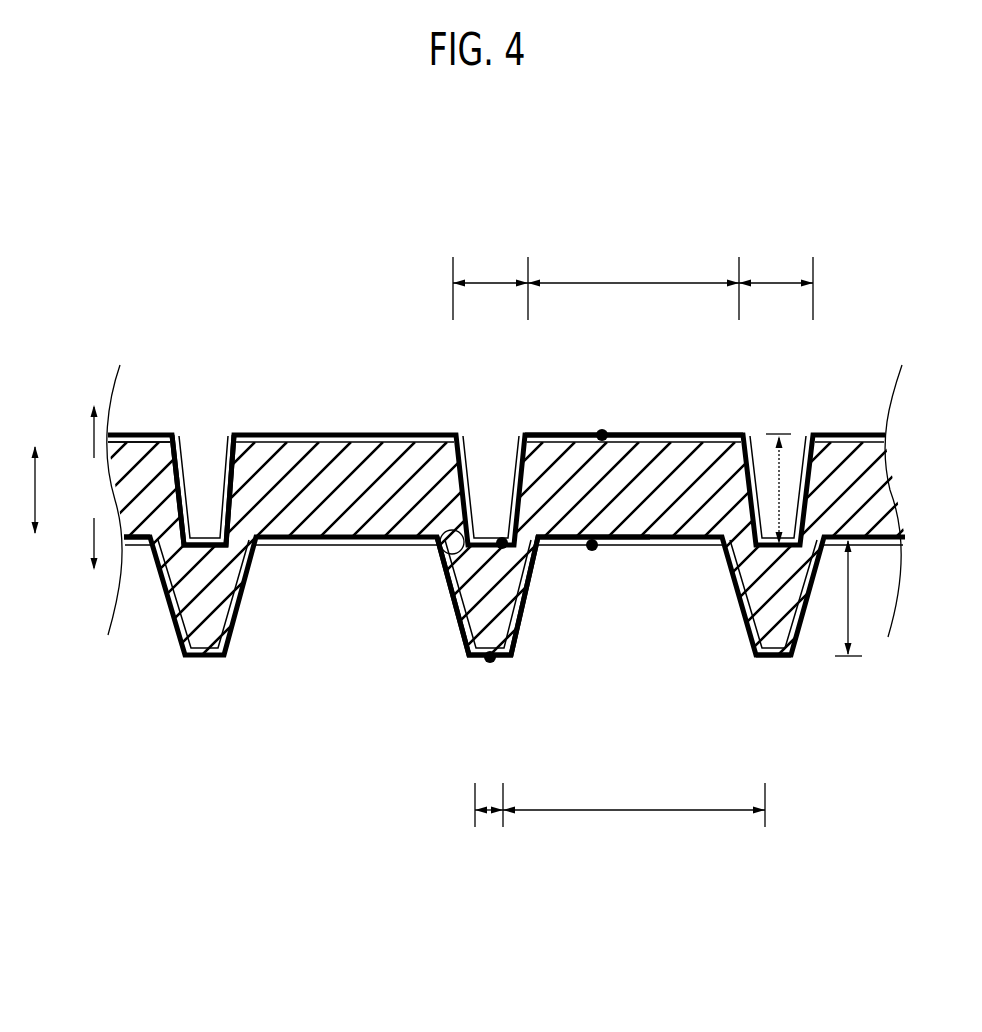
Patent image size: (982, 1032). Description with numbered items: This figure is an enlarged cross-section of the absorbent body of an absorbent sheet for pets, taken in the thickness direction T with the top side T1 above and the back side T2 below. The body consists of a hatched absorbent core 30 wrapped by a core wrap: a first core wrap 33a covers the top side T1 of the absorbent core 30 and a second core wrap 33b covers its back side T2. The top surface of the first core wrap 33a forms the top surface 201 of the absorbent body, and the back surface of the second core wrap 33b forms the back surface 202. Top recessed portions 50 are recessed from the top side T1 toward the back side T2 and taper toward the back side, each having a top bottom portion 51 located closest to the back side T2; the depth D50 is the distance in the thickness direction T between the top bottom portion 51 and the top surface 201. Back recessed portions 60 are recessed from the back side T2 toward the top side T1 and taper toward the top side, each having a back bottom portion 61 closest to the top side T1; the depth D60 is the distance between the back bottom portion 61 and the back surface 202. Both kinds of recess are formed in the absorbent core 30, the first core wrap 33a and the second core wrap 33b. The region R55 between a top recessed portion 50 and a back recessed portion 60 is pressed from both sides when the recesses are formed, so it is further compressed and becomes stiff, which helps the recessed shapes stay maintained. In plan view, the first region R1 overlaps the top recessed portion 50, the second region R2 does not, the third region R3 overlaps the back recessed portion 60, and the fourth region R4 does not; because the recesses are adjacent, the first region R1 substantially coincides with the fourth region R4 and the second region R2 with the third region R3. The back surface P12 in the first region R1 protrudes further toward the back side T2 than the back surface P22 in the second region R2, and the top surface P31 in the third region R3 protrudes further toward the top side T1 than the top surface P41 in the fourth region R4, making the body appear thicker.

The absorbent core 30 is at (327, 510).
The first core wrap 33a is at (138, 442).
The second core wrap 33b is at (140, 543).
The top recessed portion 50 is at (485, 477).
The top bottom portion 51 is at (202, 540).
The back recessed portion 60 is at (370, 560).
The back bottom portion 61 is at (641, 545).
The top surface of the absorbent body 201 is at (660, 433).
The back surface of the absorbent body 202 is at (783, 653).
The top surface of the absorbent body in the fourth region P41 is at (462, 436).
The top surface of the absorbent body in the third region P31 is at (602, 432).
The back surface of the absorbent body in the second region P22 is at (592, 551).
The back surface of the absorbent body in the first region P12 is at (490, 663).
The region between the top recessed portion and the back recessed portion R55 is at (452, 555).
The first region R1 is at (633, 280).
The second region R2 is at (633, 264).
The third region R3 is at (634, 798).
The fourth region R4 is at (491, 825).
The depth of the top recessed portion D50 is at (779, 480).
The depth of the back recessed portion D60 is at (850, 603).
The thickness direction T is at (22, 490).
The top side T1 is at (73, 431).
The back side T2 is at (73, 544).